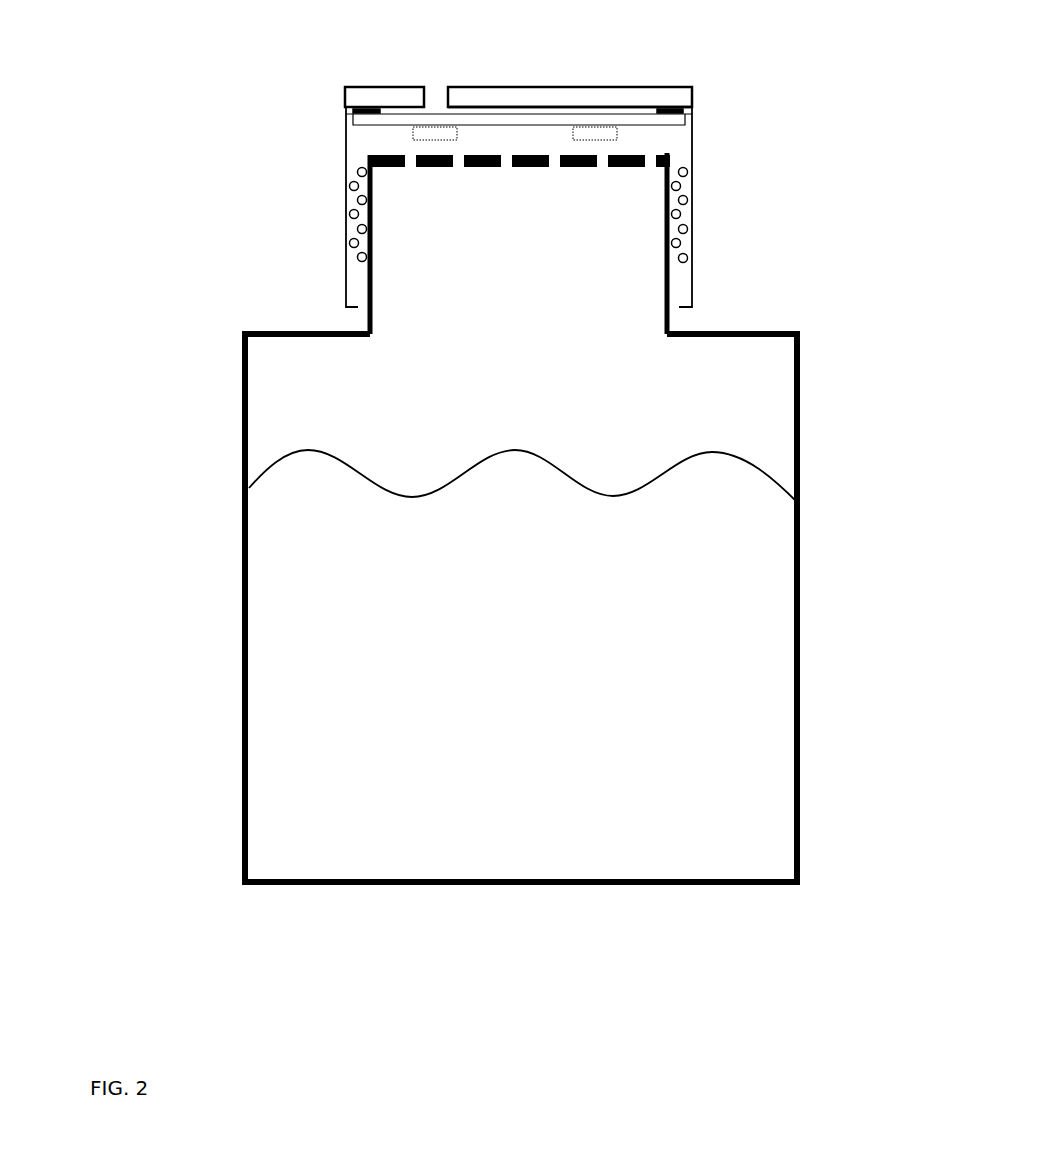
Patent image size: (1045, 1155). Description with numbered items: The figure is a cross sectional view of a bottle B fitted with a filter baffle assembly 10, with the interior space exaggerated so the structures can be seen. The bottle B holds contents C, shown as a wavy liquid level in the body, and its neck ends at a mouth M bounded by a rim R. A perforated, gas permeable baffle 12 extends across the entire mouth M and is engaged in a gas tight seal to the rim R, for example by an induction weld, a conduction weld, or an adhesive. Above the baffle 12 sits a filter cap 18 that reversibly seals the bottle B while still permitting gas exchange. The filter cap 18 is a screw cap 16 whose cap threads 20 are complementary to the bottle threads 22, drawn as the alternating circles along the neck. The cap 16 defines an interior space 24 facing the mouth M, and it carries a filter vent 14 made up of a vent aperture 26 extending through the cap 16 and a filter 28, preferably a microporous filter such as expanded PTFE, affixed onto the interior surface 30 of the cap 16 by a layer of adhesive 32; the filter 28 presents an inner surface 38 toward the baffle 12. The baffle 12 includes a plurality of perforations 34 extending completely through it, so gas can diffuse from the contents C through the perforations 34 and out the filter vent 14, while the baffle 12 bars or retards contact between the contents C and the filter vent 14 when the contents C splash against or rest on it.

The filter baffle assembly 10 is at (168, 139).
The baffle 12 is at (630, 165).
The filter vent 14 is at (340, 119).
The cap 16 is at (345, 170).
The filter cap 18 is at (398, 80).
The cap threads 20 is at (350, 238).
The bottle threads 22 is at (358, 263).
The interior space 24 is at (390, 143).
The vent aperture 26 is at (440, 95).
The filter 28 is at (527, 125).
The interior surface 30 is at (575, 108).
The layer of adhesive 32 is at (673, 110).
The perforation 34 is at (457, 172).
The inner surface 38 is at (537, 127).
The mouth M is at (495, 177).
The rim R is at (668, 155).
The bottle B is at (800, 635).
The contents C is at (748, 568).